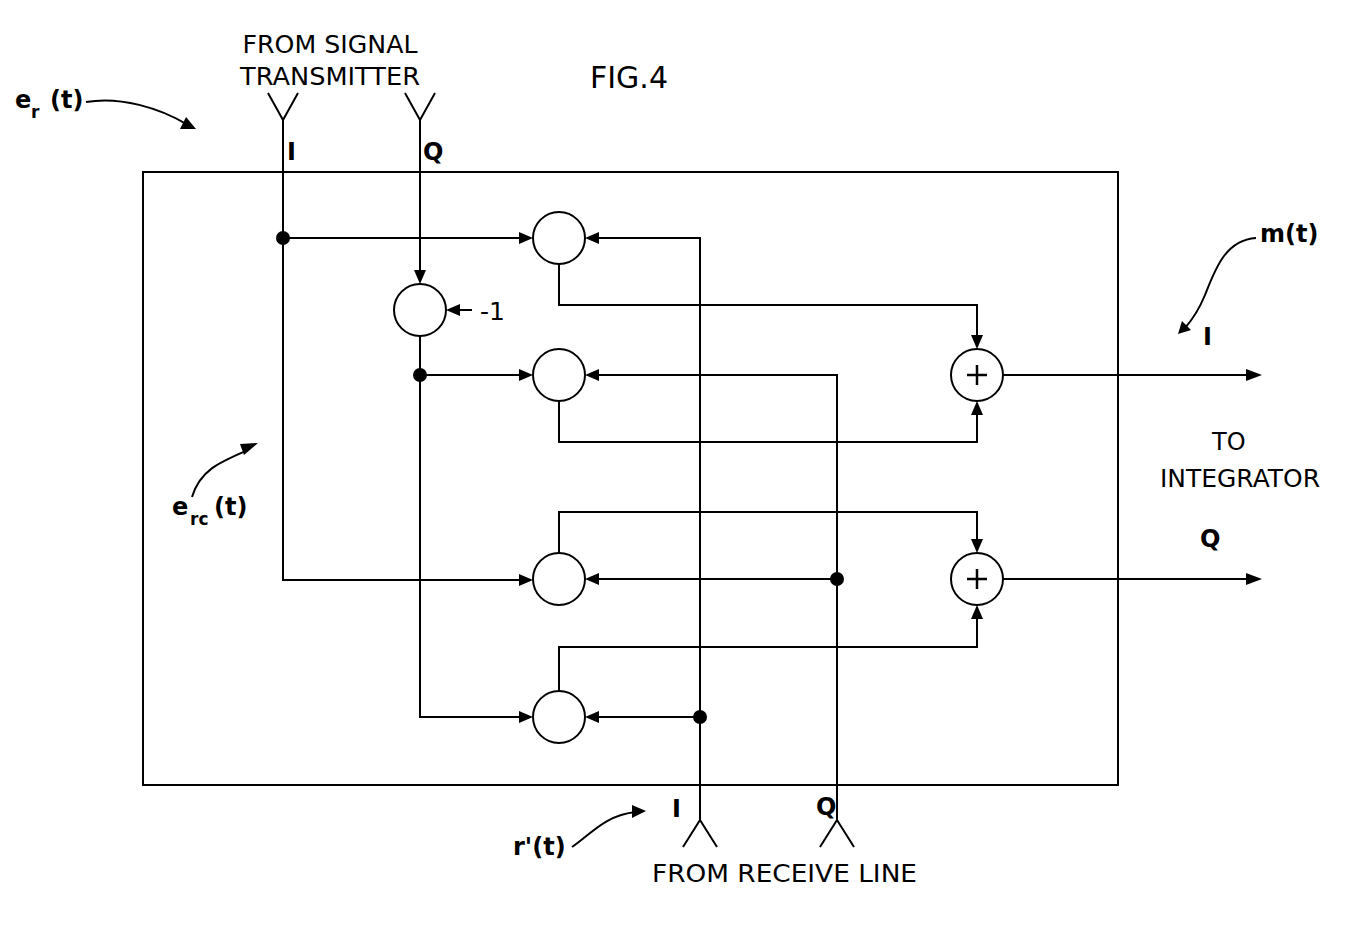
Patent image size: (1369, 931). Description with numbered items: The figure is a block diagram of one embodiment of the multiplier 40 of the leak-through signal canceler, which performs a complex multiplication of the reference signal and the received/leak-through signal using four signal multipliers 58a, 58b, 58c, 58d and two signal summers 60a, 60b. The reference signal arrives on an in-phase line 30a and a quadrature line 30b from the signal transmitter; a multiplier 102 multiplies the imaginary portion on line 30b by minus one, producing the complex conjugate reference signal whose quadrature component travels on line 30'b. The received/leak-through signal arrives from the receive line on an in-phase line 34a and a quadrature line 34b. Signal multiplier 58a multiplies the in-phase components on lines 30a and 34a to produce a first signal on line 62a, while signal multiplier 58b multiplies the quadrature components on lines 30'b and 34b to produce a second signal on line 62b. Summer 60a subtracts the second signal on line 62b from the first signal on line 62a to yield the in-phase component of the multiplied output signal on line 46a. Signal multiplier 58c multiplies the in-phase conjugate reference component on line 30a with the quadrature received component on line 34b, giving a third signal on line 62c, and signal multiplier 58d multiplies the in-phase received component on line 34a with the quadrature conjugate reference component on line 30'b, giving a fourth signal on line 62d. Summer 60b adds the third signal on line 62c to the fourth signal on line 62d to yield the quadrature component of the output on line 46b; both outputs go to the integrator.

The multiplier 40 is at (752, 170).
The line 30a is at (283, 282).
The line 30b is at (420, 212).
The line 30'b is at (473, 529).
The multiplier 102 is at (394, 308).
The signal multiplier 58a is at (580, 218).
The signal multiplier 58b is at (578, 356).
The signal multiplier 58c is at (540, 599).
The signal multiplier 58d is at (540, 735).
The line 62a is at (860, 303).
The line 62b is at (978, 432).
The line 62c is at (978, 530).
The line 62d is at (930, 648).
The summer 60a is at (998, 392).
The summer 60b is at (998, 595).
The line 46a is at (1175, 375).
The line 46b is at (1175, 579).
The line 34a is at (700, 802).
The line 34b is at (837, 802).